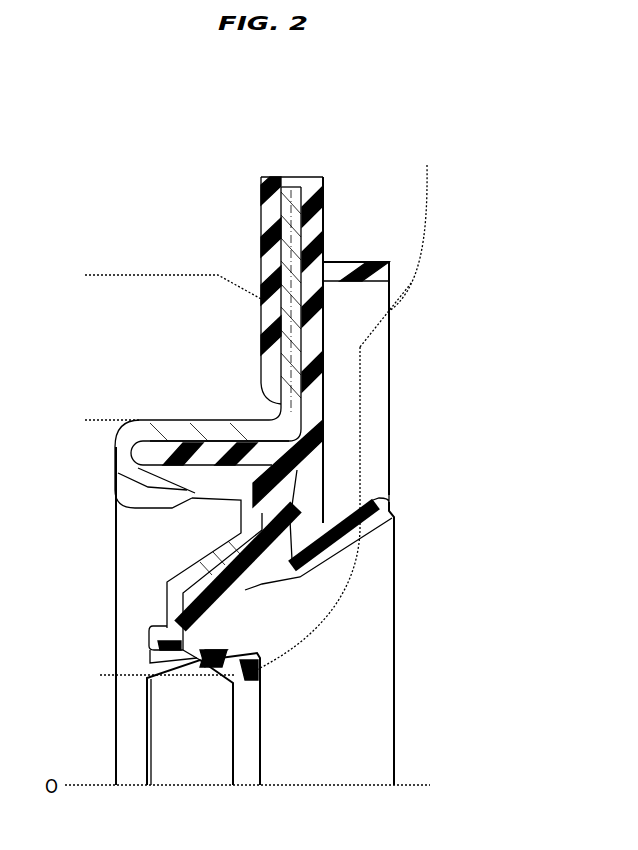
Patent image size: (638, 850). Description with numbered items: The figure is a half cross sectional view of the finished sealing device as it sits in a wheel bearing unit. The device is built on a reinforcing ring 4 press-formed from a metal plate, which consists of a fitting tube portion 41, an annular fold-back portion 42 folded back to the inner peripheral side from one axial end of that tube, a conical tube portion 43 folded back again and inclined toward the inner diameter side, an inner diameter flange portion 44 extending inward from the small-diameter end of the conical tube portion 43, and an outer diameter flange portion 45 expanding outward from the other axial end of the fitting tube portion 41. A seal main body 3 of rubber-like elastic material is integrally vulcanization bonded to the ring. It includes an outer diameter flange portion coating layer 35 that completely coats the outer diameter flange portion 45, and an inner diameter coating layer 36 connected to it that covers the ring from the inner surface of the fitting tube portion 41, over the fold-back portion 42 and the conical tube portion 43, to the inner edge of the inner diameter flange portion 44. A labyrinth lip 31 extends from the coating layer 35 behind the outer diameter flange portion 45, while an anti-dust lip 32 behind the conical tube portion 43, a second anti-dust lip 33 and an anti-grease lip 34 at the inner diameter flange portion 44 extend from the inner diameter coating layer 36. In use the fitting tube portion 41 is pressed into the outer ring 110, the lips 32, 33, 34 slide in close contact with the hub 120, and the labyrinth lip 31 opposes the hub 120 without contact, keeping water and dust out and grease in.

The outer ring 110 is at (126, 290).
The hub 120 is at (356, 452).
The seal main body 3 is at (272, 583).
The labyrinth lip 31 is at (389, 265).
The anti-dust lip 32 is at (387, 513).
The anti-dust lip 33 is at (255, 680).
The anti-grease lip 34 is at (150, 662).
The outer diameter flange portion coating layer 35 is at (314, 222).
The inner diameter coating layer 36 is at (252, 587).
The reinforcing ring 4 is at (165, 418).
The fitting tube portion 41 is at (210, 426).
The fold-back portion 42 is at (190, 490).
The conical tube portion 43 is at (217, 551).
The inner diameter flange portion 44 is at (170, 607).
The outer diameter flange portion 45 is at (261, 218).